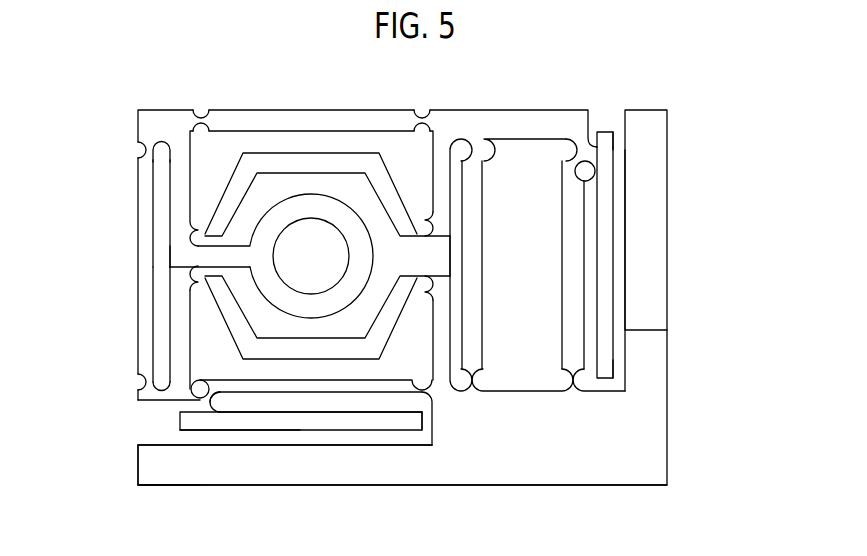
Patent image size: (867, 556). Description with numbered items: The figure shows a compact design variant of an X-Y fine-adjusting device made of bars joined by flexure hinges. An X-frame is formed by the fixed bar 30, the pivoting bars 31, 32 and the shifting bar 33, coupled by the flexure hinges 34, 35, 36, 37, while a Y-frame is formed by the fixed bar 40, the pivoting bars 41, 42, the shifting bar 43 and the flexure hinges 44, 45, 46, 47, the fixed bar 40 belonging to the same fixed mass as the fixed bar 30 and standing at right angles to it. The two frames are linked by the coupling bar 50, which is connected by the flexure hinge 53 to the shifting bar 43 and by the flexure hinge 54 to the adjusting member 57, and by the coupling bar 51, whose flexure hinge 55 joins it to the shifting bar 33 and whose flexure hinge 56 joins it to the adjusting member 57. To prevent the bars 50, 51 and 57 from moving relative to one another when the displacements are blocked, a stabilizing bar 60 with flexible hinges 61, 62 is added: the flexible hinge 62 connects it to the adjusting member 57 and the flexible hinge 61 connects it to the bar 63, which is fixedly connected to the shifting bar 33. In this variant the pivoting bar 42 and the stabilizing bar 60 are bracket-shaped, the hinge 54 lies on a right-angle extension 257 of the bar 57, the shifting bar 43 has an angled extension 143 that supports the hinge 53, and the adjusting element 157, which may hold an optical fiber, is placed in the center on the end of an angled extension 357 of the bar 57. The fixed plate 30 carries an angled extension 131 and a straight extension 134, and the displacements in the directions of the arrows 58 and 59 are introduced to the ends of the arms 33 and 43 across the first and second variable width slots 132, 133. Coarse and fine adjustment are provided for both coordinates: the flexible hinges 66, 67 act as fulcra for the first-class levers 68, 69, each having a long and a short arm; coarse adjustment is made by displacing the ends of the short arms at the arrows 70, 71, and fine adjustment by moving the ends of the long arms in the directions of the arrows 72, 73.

The right-angle extension 257 is at (150, 118).
The flexure hinge 56 is at (201, 118).
The coupling bar 51 is at (313, 118).
The flexure hinge 55 is at (421, 120).
The flexible hinge 66 is at (587, 158).
The flexure hinge 37 is at (573, 146).
The shifting bar 33 is at (523, 120).
The pivoting bar 32 is at (565, 268).
The arrow 58 is at (596, 162).
The first variable width slot 132 is at (610, 123).
The first-class lever 68 is at (607, 255).
The arrow 70 is at (617, 140).
The arrow 72 is at (619, 372).
The angled extension 131 is at (652, 322).
The flexure hinge 35 is at (576, 389).
The flexure hinge 34 is at (474, 387).
The fixed bar 30 is at (522, 402).
The flexure hinge 36 is at (472, 141).
The pivoting bar 31 is at (478, 200).
The bar 63 is at (437, 170).
The flexible hinge 61 is at (425, 222).
The flexure hinge 45 is at (433, 283).
The fixed bar 40 is at (447, 320).
The stabilizing bar 60 is at (288, 162).
The pivoting bar 42 is at (280, 348).
The adjusting element 157 is at (282, 276).
The flexible hinge 62 is at (190, 225).
The flexure hinge 47 is at (196, 285).
The angled extension 357 is at (205, 263).
The coupling bar 50 is at (162, 264).
The flexure hinge 54 is at (146, 151).
The adjusting member 57 is at (177, 175).
The shifting bar 43 is at (180, 329).
The flexure hinge 53 is at (152, 378).
The angled extension 143 is at (162, 396).
The second variable width slot 133 is at (185, 402).
The flexure hinge 46 is at (200, 401).
The flexible hinge 67 is at (176, 412).
The straight extension 134 is at (160, 472).
The flexure hinge 44 is at (433, 392).
The pivoting bar 41 is at (307, 398).
The first-class lever 69 is at (342, 423).
The arrow 71 is at (188, 433).
The arrow 59 is at (212, 410).
The arrow 73 is at (410, 432).